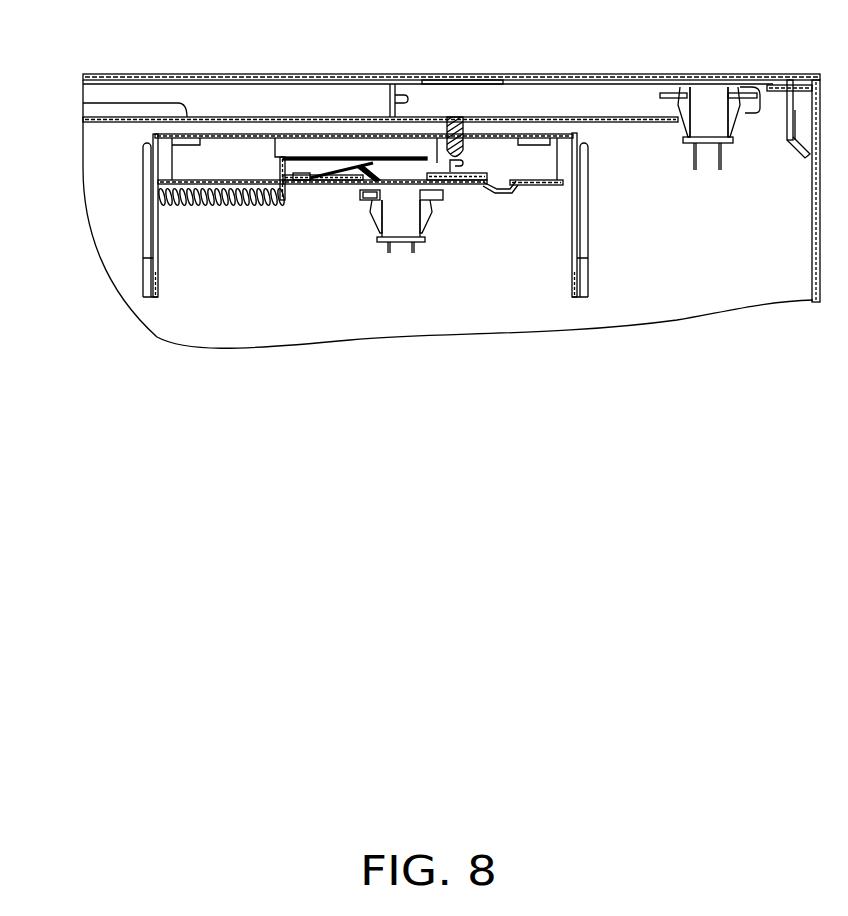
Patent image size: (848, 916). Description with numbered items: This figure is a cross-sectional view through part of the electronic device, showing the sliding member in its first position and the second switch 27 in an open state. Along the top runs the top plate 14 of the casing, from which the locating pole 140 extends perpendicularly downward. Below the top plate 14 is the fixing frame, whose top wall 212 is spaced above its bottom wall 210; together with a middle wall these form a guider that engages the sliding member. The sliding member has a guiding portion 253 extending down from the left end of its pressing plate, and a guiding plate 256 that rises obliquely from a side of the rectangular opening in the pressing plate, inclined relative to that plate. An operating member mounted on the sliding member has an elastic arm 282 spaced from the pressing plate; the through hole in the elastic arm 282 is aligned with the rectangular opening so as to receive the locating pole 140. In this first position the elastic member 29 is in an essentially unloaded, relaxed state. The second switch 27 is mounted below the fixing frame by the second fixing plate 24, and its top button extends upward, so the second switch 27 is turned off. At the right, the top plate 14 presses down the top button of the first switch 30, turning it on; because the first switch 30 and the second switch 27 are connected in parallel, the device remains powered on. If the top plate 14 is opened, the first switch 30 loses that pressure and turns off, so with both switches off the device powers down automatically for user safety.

The top plate 14 is at (523, 75).
The locating pole 140 is at (455, 117).
The top wall 212 is at (223, 133).
The bottom wall 210 is at (187, 185).
The elastic member 29 is at (215, 207).
The guiding portion 253 is at (284, 200).
The elastic arm 282 is at (376, 162).
The guiding plate 256 is at (335, 182).
The second fixing plate 24 is at (432, 194).
The second switch 27 is at (405, 223).
The first switch 30 is at (700, 110).